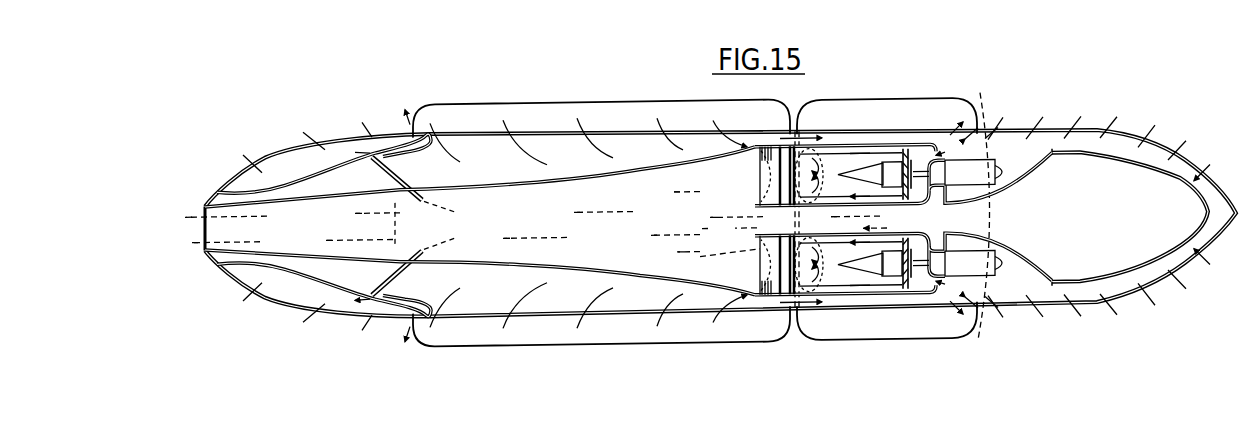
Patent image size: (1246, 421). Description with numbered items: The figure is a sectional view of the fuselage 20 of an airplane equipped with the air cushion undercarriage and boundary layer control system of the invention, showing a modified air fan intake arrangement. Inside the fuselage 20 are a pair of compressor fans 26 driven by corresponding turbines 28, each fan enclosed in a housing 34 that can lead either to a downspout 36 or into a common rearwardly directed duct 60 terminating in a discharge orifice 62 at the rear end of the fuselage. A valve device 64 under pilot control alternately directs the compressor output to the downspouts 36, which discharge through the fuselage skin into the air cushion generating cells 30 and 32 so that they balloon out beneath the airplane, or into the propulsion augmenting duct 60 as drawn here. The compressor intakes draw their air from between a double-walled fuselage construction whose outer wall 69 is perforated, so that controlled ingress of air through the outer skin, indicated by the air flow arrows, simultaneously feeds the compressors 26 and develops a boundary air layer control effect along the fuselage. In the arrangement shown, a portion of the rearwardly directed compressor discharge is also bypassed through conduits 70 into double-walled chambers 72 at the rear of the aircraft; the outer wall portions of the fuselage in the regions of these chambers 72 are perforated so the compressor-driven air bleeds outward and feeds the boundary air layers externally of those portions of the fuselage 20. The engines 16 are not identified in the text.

The gas turbine engine 16 is at (882, 219).
The fuselage 20 is at (720, 199).
The compressor fan 26 is at (883, 218).
The turbine 28 is at (973, 217).
The air cushion generating cell 30 is at (865, 125).
The air cushion generating cell 32 is at (645, 125).
The housing 34 is at (793, 220).
The downspout 36 is at (851, 219).
The rearwardly directed duct 60 is at (536, 223).
The discharge orifice 62 is at (188, 235).
The valve device 64 is at (821, 220).
The outer wall 69 is at (540, 91).
The conduit 70 is at (405, 225).
The double-walled chamber 72 is at (324, 226).